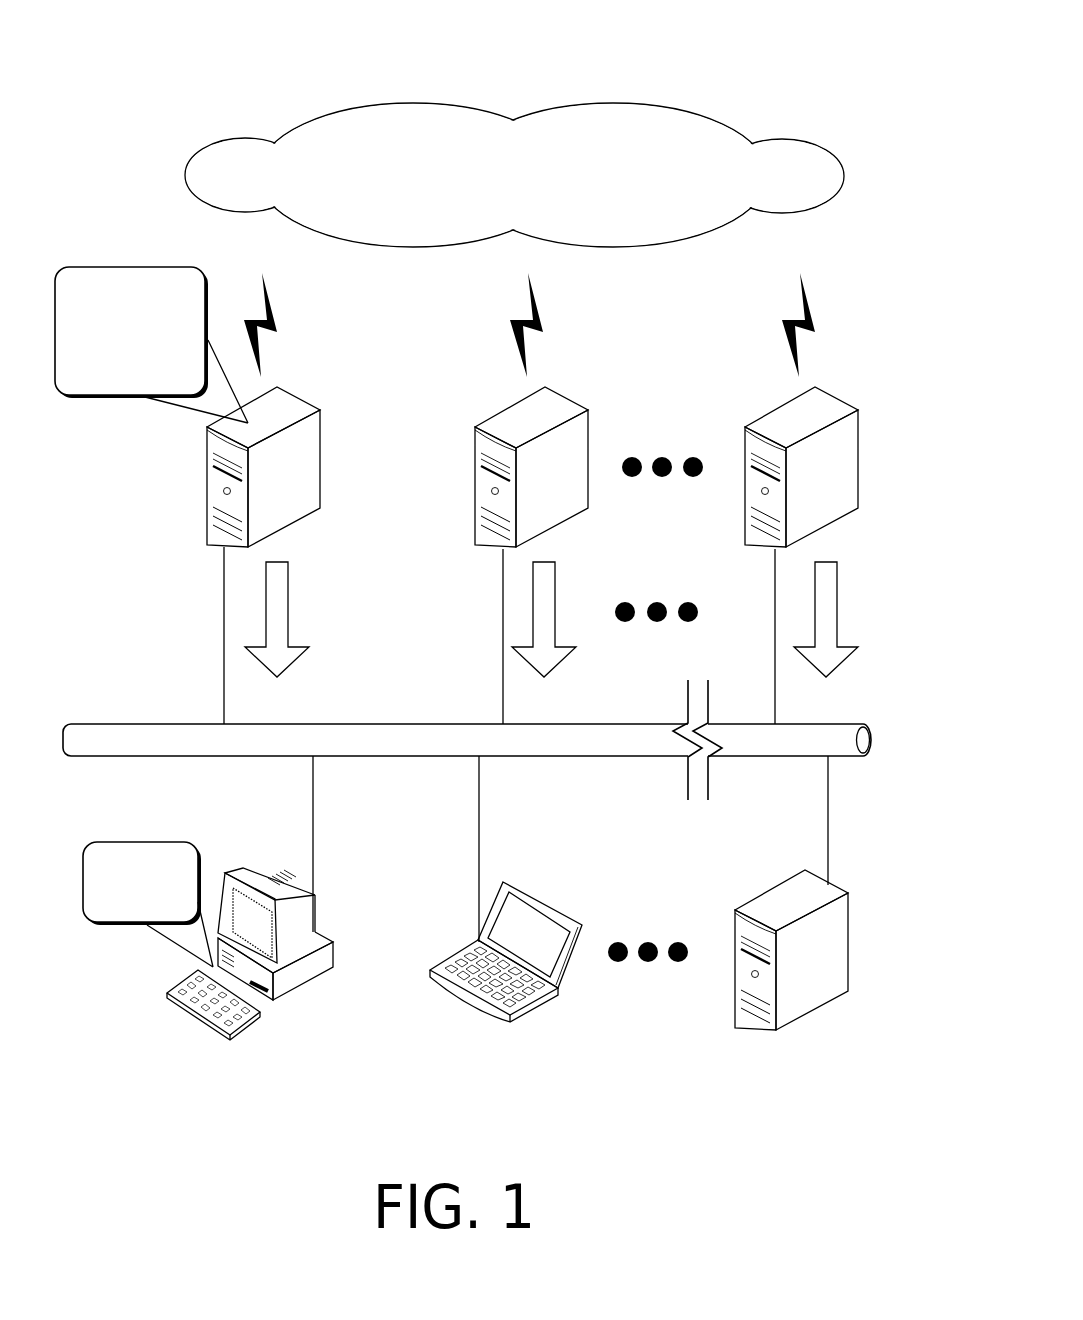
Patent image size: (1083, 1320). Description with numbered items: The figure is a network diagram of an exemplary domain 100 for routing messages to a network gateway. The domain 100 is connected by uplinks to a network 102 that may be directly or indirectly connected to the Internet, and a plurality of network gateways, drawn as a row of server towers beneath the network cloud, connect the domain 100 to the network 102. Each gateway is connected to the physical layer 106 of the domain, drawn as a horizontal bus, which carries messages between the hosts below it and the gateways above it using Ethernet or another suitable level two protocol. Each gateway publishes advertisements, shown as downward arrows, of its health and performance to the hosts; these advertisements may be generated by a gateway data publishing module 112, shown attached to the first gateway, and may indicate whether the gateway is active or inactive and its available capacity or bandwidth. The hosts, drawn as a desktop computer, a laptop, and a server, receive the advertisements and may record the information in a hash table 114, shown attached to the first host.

The domain 100 is at (703, 55).
The network 102 is at (531, 197).
The physical layer 106 is at (450, 748).
The gateway data publishing module 112 is at (113, 376).
The hash table 114 is at (122, 915).